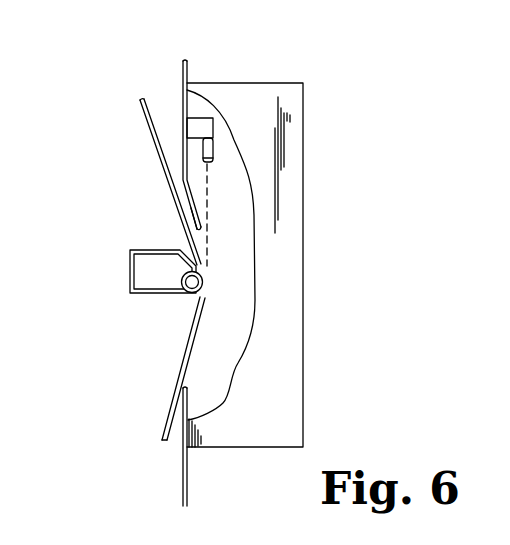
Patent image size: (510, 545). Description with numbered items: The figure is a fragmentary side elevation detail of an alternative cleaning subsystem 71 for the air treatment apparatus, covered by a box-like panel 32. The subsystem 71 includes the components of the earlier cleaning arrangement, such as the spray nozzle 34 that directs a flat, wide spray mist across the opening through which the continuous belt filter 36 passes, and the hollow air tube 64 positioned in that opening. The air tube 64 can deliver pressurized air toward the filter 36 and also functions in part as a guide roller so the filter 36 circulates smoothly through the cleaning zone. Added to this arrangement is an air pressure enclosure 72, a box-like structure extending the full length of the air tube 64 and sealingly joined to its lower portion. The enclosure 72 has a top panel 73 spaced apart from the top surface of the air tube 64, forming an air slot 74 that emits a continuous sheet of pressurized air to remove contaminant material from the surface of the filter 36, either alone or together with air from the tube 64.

The box-like panel 32 is at (303, 419).
The spray nozzle 34 is at (214, 142).
The continuous belt filter 36 is at (149, 121).
The air tube 64 is at (187, 294).
The cleaning subsystem 71 is at (335, 148).
The air pressure enclosure 72 is at (130, 283).
The top panel 73 is at (193, 259).
The air slot 74 is at (203, 266).